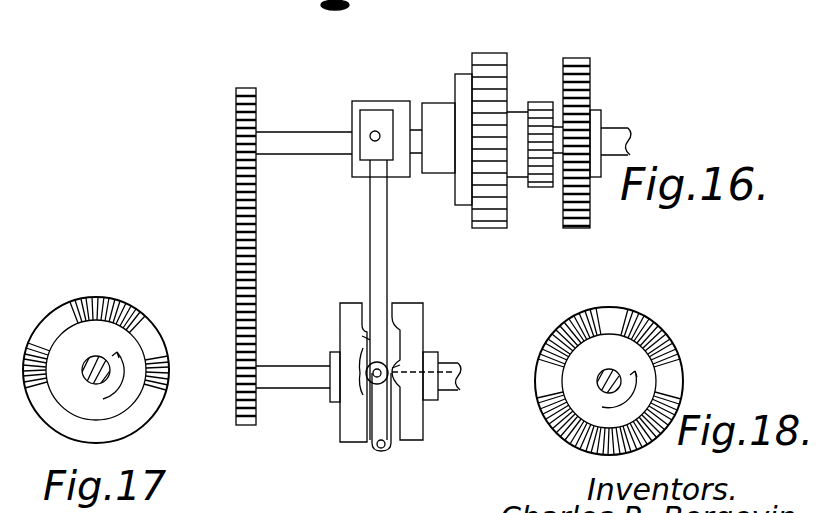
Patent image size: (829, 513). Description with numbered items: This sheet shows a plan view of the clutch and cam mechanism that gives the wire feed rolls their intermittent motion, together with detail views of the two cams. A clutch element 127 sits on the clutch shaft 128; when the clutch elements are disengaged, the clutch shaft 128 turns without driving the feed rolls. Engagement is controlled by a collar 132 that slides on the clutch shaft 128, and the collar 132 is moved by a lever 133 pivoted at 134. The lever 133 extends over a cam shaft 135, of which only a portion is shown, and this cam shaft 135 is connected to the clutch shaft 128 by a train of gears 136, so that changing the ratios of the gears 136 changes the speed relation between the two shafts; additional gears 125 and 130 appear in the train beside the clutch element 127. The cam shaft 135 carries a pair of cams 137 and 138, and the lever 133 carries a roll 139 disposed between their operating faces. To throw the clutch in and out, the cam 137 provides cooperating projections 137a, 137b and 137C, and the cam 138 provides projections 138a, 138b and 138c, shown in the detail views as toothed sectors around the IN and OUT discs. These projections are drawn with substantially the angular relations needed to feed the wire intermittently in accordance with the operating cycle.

In FIG. 16, the gear 125 is at (535, 108).
In FIG. 16, the clutch element 127 is at (483, 72).
In FIG. 16, the clutch shaft 128 is at (318, 147).
In FIG. 16, the gear 130 is at (580, 83).
In FIG. 16, the collar 132 is at (357, 112).
In FIG. 16, the lever 133 is at (382, 223).
In FIG. 16, the pivot 134 is at (383, 452).
In FIG. 16, the cam shaft 135 is at (305, 380).
In FIG. 16, the train of gears 136 is at (238, 190).
In FIG. 16, the cam 137 is at (345, 322).
In FIG. 17, the cam 137 is at (77, 402).
In FIG. 16, the cam projection 137a is at (368, 340).
In FIG. 17, the cam projection 137a is at (143, 330).
In FIG. 16, the cam projection 137b is at (365, 415).
In FIG. 17, the cam projection 137b is at (140, 413).
In FIG. 17, the cam projection 137C is at (52, 320).
In FIG. 16, the cam 138 is at (415, 317).
In FIG. 18, the cam 138 is at (575, 395).
In FIG. 16, the cam projection 138a is at (393, 368).
In FIG. 18, the cam projection 138a is at (612, 313).
In FIG. 18, the cam projection 138b is at (677, 375).
In FIG. 18, the cam projection 138c is at (545, 382).
In FIG. 16, the roll 139 is at (372, 390).